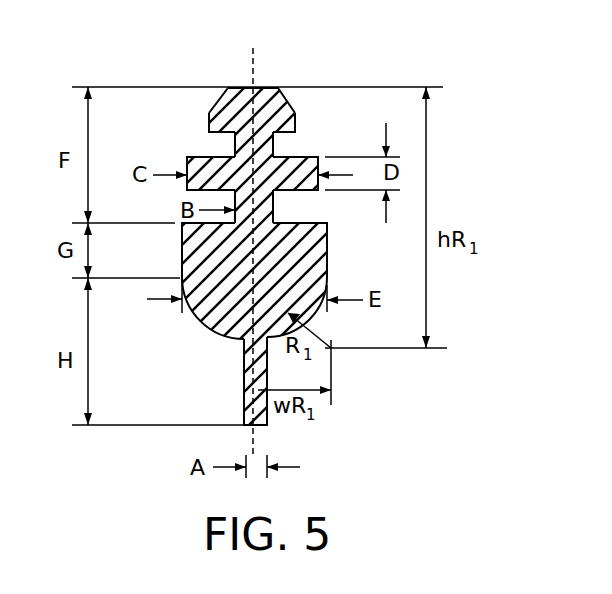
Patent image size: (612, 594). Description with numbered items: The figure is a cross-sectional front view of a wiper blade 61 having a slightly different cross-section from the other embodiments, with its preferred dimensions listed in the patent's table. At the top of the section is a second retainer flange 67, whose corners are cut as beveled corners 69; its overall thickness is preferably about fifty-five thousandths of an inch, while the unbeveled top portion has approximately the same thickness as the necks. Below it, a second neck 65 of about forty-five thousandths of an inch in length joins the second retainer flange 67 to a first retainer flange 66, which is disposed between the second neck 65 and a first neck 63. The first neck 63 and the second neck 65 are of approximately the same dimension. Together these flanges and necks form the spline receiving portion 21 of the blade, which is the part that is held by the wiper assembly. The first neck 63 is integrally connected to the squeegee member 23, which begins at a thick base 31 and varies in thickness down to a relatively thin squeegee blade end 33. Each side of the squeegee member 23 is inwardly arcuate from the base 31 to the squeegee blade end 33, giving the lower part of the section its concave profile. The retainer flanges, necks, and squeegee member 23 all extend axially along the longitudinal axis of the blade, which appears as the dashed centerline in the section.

The wiper blade 61 is at (182, 62).
The beveled corners 69 is at (283, 97).
The second retainer flange 67 is at (295, 120).
The second neck 65 is at (273, 150).
The first retainer flange 66 is at (252, 173).
The spline receiving portion 21 is at (178, 156).
The first neck 63 is at (275, 194).
The base 31 is at (318, 262).
The squeegee member 23 is at (213, 305).
The squeegee blade end 33 is at (262, 426).